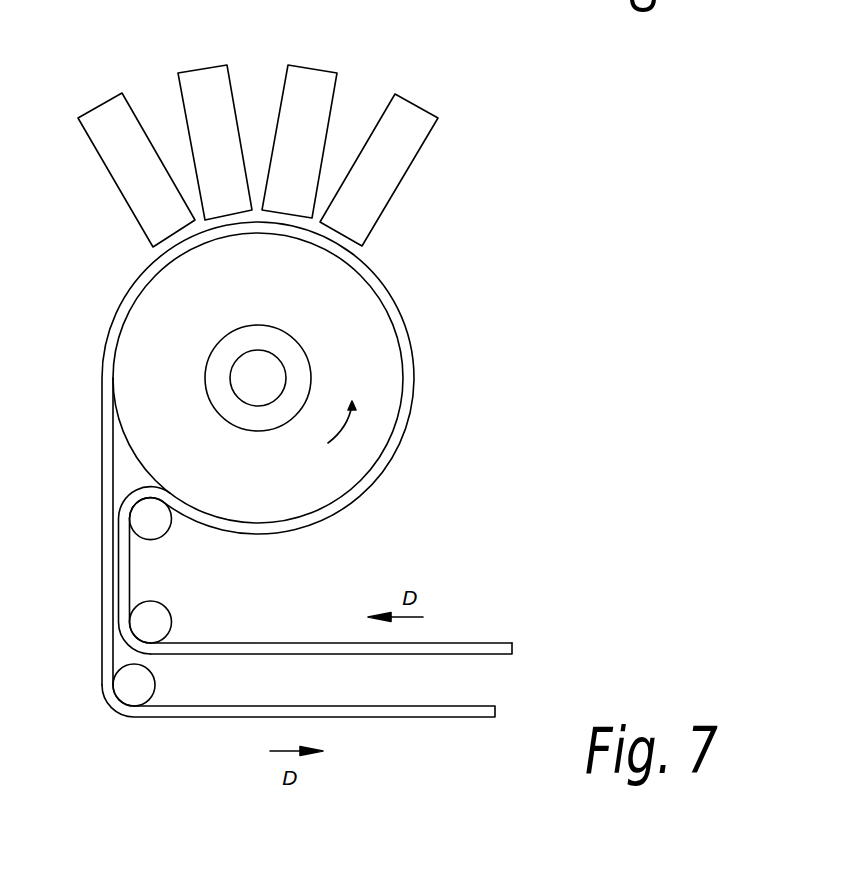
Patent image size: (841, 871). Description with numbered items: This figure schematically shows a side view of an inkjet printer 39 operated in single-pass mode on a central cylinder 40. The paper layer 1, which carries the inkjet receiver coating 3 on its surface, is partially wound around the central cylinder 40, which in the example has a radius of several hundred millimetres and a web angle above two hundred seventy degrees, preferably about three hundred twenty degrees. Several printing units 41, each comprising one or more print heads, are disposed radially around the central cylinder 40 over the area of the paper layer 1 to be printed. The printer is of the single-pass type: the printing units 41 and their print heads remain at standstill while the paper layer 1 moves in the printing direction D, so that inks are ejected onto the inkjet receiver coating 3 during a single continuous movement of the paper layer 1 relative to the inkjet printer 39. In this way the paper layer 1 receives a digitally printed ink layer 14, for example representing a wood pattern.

The paper layer 1 is at (272, 652).
The inkjet receiver coating 3 is at (478, 642).
The digitally printed ink layer 14 is at (102, 433).
The inkjet printer 39 is at (435, 308).
The central cylinder 40 is at (385, 415).
The printing units 41 is at (395, 93).